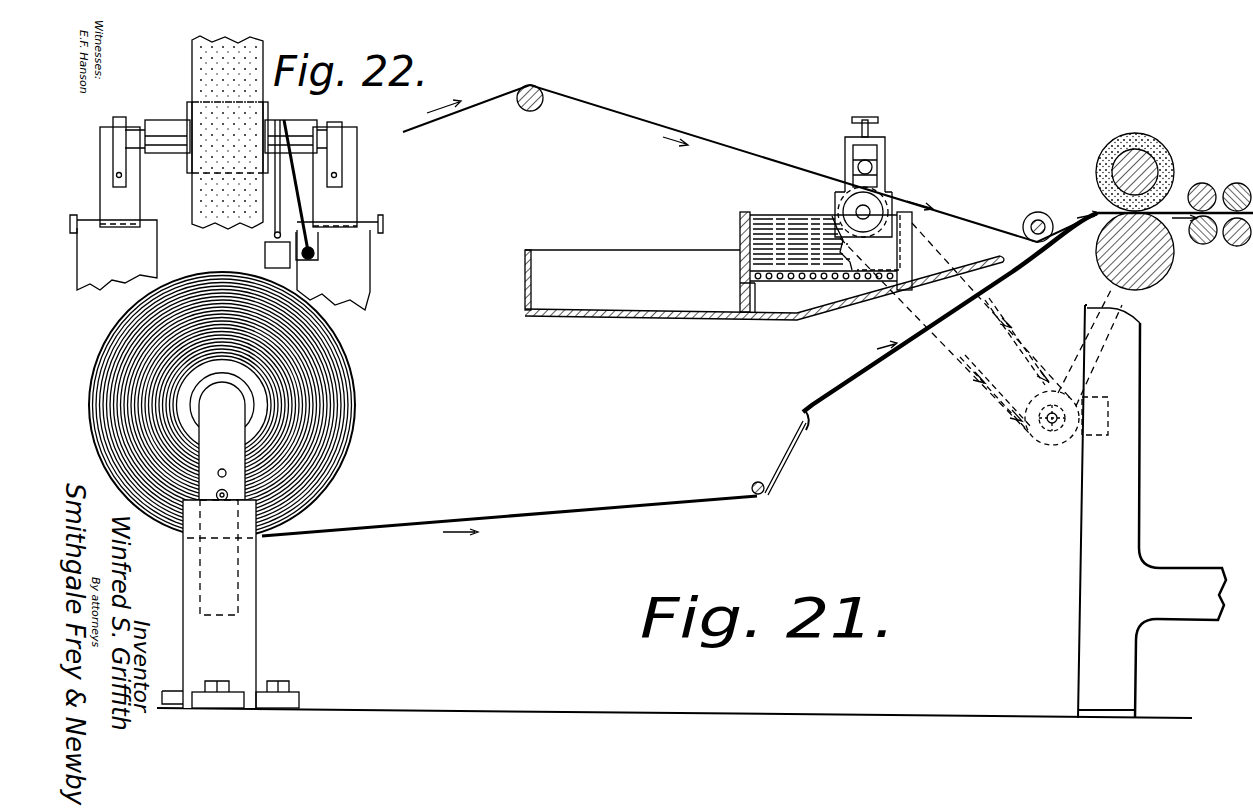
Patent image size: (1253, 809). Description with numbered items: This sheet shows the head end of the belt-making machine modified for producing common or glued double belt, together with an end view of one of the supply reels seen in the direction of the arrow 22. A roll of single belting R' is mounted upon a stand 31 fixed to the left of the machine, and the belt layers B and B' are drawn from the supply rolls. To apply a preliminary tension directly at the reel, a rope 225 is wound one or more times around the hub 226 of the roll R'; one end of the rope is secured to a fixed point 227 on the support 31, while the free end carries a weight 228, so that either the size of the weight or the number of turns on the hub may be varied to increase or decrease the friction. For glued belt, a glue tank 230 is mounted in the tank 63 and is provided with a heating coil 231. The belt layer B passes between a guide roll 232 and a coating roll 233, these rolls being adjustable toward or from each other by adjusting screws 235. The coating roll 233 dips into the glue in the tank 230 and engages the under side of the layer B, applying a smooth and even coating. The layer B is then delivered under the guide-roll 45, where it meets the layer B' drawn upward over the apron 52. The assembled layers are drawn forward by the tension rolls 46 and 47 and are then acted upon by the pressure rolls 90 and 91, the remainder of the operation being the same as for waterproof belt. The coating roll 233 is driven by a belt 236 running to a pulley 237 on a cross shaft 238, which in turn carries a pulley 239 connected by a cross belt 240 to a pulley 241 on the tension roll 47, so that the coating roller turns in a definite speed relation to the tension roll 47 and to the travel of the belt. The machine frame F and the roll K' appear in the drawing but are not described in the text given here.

In FIG. 21, the arrow 22 is at (412, 400).
In FIG. 22, the stand 31 is at (365, 283).
In FIG. 21, the stand 31 is at (252, 613).
In FIG. 21, the guide-roll 45 is at (1036, 212).
In FIG. 21, the tension roll 46 is at (1153, 151).
In FIG. 21, the tension roll 47 is at (1097, 258).
In FIG. 21, the apron 52 is at (846, 380).
In FIG. 21, the tank 63 is at (610, 314).
In FIG. 21, the pressure roll 90 is at (1238, 247).
In FIG. 21, the pressure roll 91 is at (1225, 181).
In FIG. 22, the rope 225 is at (305, 215).
In FIG. 22, the hub 226 is at (288, 126).
In FIG. 22, the fixed point 227 is at (314, 254).
In FIG. 22, the weight 228 is at (265, 253).
In FIG. 21, the glue tank 230 is at (787, 202).
In FIG. 21, the heating coil 231 is at (750, 277).
In FIG. 21, the guide roll 232 is at (886, 170).
In FIG. 21, the coating roll 233 is at (884, 198).
In FIG. 21, the adjusting screws 235 is at (876, 121).
In FIG. 21, the belt 236 is at (988, 302).
In FIG. 21, the pulley 237 is at (1030, 432).
In FIG. 21, the cross shaft 238 is at (1055, 443).
In FIG. 21, the pulley 239 is at (1048, 400).
In FIG. 21, the cross belt 240 is at (1127, 292).
In FIG. 21, the pulley 241 is at (1200, 245).
In FIG. 21, the belt layer B is at (750, 163).
In FIG. 21, the belt layer B' is at (535, 473).
In FIG. 21, the frame F is at (1173, 500).
In FIG. 21, the roll of web material K' is at (231, 405).
In FIG. 22, the roll of single belting R' is at (209, 132).